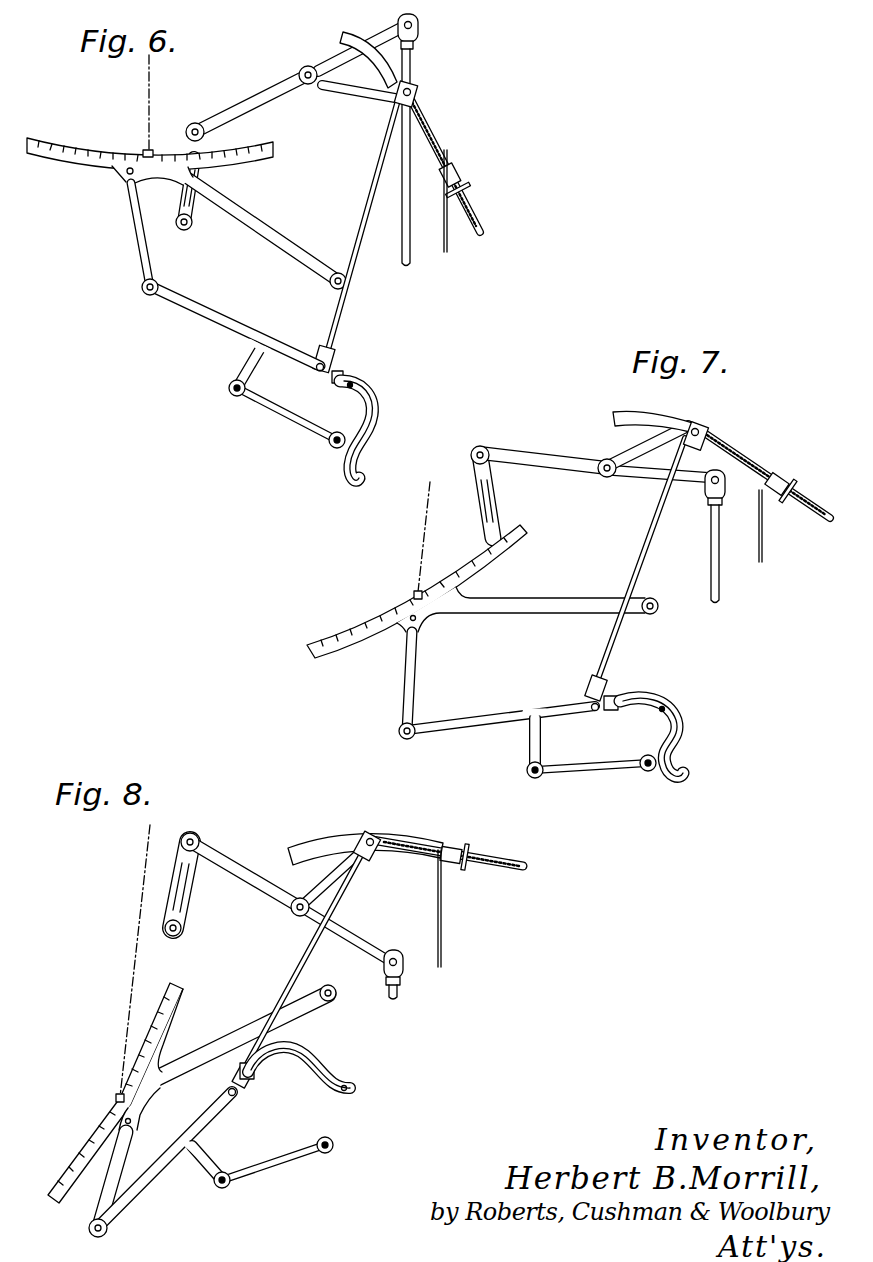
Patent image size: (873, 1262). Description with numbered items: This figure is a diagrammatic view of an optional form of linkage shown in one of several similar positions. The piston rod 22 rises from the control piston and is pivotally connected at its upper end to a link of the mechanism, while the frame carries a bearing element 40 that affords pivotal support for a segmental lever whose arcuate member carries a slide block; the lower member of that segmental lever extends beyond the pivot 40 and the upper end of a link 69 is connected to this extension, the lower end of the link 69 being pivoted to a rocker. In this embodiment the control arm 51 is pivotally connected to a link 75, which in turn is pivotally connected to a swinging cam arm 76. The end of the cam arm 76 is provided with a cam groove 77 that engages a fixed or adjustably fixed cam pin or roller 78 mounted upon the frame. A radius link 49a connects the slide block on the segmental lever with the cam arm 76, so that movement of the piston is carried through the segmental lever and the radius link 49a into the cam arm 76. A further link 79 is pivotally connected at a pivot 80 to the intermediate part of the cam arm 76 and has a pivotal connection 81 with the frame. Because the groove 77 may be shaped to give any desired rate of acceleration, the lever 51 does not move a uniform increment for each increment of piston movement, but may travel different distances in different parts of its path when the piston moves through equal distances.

In FIG. 6, the piston rod 22 is at (405, 264).
In FIG. 7, the piston rod 22 is at (722, 598).
In FIG. 8, the piston rod 22 is at (393, 974).
In FIG. 6, the bearing element 40 is at (441, 150).
In FIG. 7, the bearing element 40 is at (749, 460).
In FIG. 8, the bearing element 40 is at (432, 845).
In FIG. 6, the radius link 49a is at (339, 313).
In FIG. 7, the radius link 49a is at (646, 548).
In FIG. 8, the radius link 49a is at (302, 962).
In FIG. 6, the control arm 51 is at (248, 223).
In FIG. 7, the control arm 51 is at (572, 580).
In FIG. 8, the control arm 51 is at (226, 1044).
In FIG. 6, the link 69 is at (450, 248).
In FIG. 7, the link 69 is at (765, 553).
In FIG. 8, the link 69 is at (444, 900).
In FIG. 6, the link 75 is at (138, 225).
In FIG. 7, the link 75 is at (402, 682).
In FIG. 8, the link 75 is at (135, 1150).
In FIG. 6, the swinging cam arm 76 is at (228, 325).
In FIG. 7, the swinging cam arm 76 is at (500, 697).
In FIG. 8, the swinging cam arm 76 is at (143, 1183).
In FIG. 6, the cam groove 77 is at (379, 420).
In FIG. 7, the cam groove 77 is at (681, 756).
In FIG. 8, the cam groove 77 is at (307, 1052).
In FIG. 6, the cam pin or roller 78 is at (357, 384).
In FIG. 7, the cam pin or roller 78 is at (667, 708).
In FIG. 8, the cam pin or roller 78 is at (350, 1088).
In FIG. 6, the link 79 is at (282, 415).
In FIG. 7, the link 79 is at (608, 771).
In FIG. 8, the link 79 is at (277, 1160).
In FIG. 6, the pivotal connection 80 is at (228, 388).
In FIG. 7, the pivotal connection 80 is at (526, 772).
In FIG. 8, the pivotal connection 80 is at (222, 1189).
In FIG. 6, the pivotal connection 81 is at (329, 445).
In FIG. 7, the pivotal connection 81 is at (646, 775).
In FIG. 8, the pivotal connection 81 is at (334, 1146).